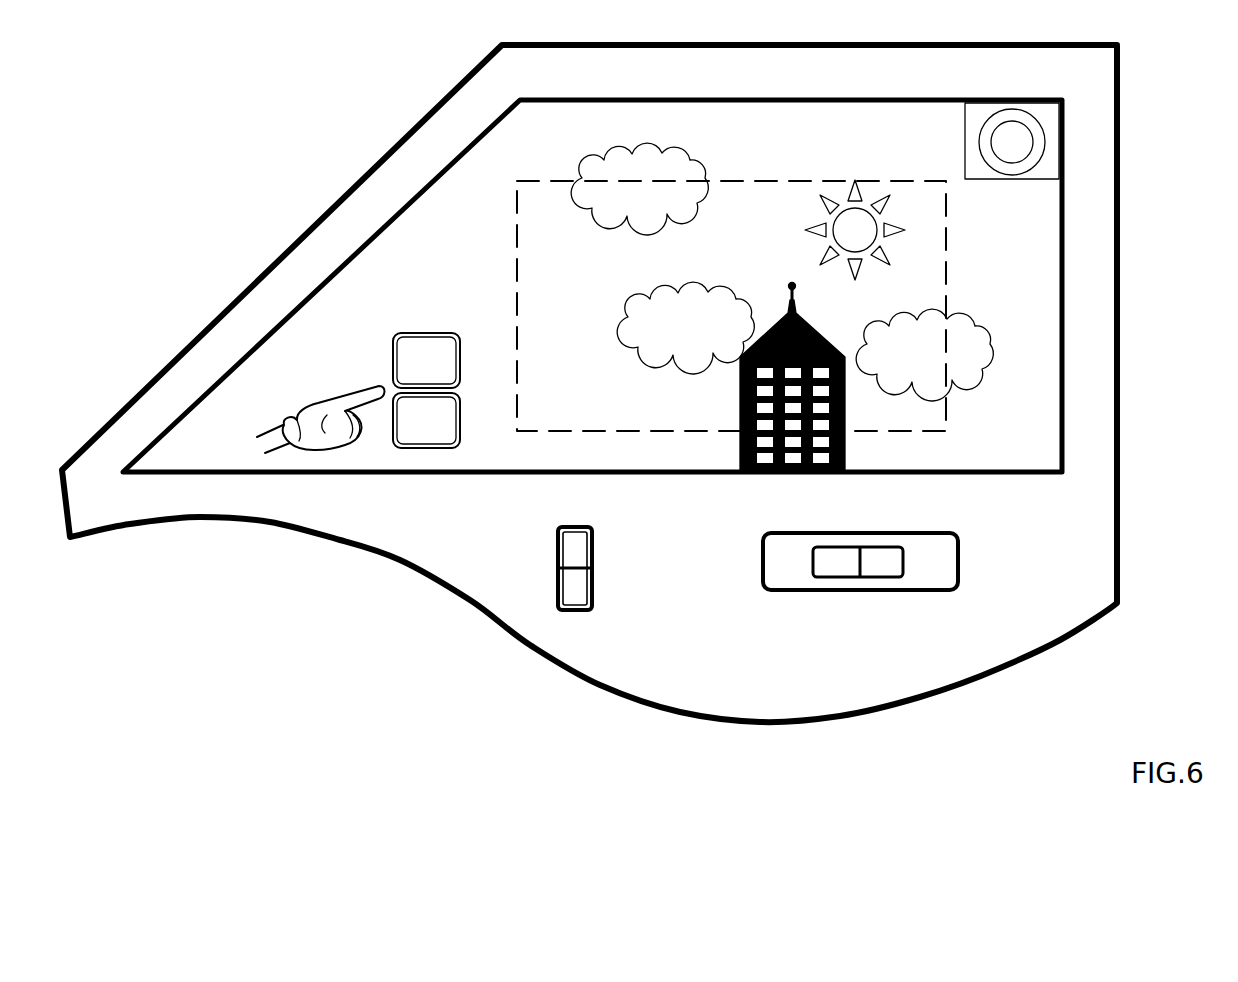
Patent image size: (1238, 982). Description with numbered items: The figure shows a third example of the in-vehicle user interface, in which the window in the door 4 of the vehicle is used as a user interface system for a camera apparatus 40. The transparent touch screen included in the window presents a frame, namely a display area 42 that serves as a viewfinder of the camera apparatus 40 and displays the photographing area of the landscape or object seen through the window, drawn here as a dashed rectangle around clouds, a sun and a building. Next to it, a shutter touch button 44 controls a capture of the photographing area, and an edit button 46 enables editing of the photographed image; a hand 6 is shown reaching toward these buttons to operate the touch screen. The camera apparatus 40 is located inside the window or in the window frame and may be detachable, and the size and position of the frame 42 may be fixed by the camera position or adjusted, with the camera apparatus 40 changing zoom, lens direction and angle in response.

The door 4 is at (316, 212).
The hand of user 6 is at (285, 412).
The camera apparatus 40 is at (961, 142).
The display area 42 is at (510, 308).
The shutter touch button 44 is at (424, 329).
The edit button 46 is at (469, 421).